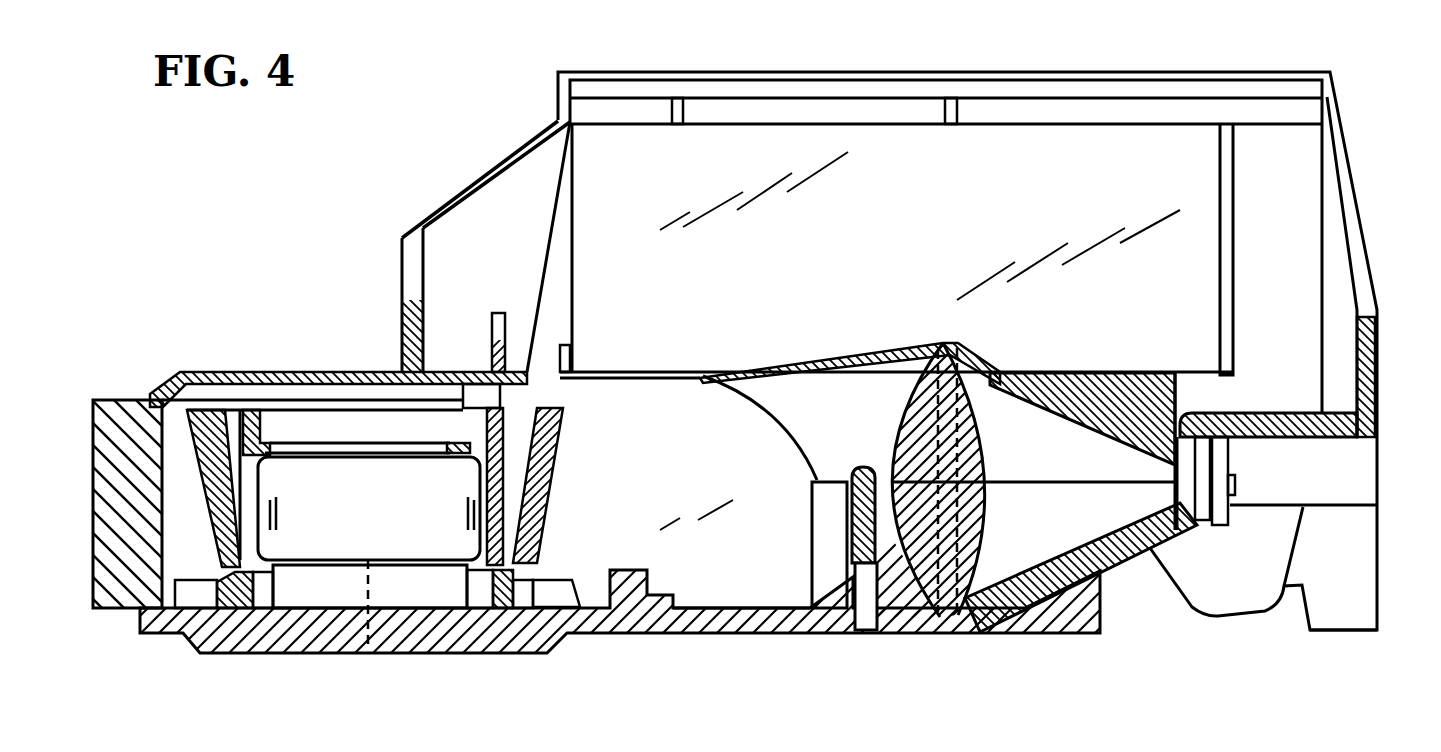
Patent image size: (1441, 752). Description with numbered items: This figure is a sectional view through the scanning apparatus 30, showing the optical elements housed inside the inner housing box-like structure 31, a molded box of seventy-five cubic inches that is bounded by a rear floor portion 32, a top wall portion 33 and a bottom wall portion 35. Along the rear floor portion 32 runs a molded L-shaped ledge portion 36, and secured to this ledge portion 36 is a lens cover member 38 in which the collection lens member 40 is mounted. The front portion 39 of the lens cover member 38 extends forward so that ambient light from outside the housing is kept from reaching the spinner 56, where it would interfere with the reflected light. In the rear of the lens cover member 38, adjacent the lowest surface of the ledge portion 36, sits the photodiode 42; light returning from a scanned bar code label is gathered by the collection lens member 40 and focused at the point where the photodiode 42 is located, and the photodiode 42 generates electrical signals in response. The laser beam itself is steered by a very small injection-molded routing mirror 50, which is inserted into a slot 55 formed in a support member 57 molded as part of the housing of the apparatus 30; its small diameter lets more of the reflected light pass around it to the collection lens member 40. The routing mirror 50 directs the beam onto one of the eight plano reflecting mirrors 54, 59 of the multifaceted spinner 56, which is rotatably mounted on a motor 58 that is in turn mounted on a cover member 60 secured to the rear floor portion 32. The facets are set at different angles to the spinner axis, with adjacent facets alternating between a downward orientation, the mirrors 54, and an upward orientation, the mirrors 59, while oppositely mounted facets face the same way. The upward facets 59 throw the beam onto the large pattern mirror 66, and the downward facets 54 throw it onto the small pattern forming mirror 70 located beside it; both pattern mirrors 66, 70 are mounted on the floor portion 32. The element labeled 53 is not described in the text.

The scanning apparatus 30 is at (990, 45).
The inner housing box-like structure 31 is at (480, 183).
The rear floor portion 32 is at (812, 632).
The top wall portion 33 is at (1360, 185).
The bottom wall portion 35 is at (400, 258).
The ledge portion 36 is at (1305, 413).
The lens cover member 38 is at (815, 360).
The front portion 39 is at (745, 395).
The collection lens member 40 is at (985, 512).
The photodiode 42 is at (1235, 483).
The routing mirror 50 is at (815, 478).
The spacer 53 is at (385, 590).
The reflecting mirrors 54 is at (538, 500).
The slot 55 is at (855, 525).
The spinner 56 is at (268, 460).
The support member 57 is at (845, 556).
The motor 58 is at (356, 470).
The reflecting mirrors 59 is at (297, 593).
The cover member 60 is at (367, 640).
The large pattern mirror 66 is at (1120, 135).
The small pattern forming mirror 70 is at (727, 592).